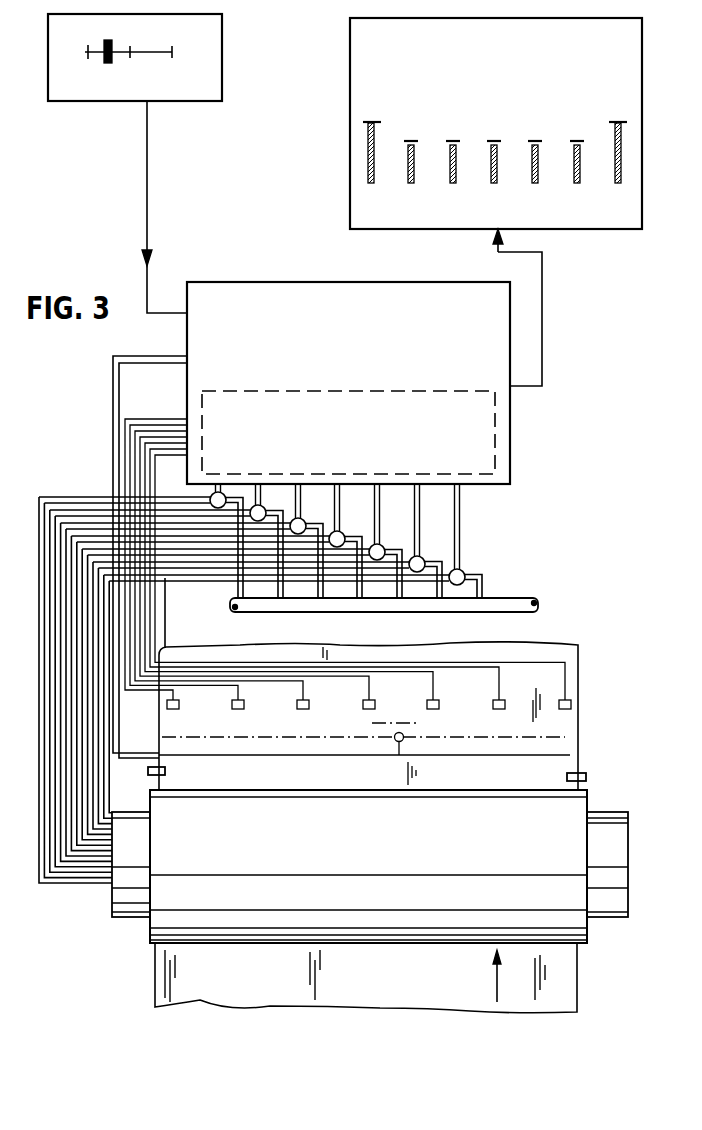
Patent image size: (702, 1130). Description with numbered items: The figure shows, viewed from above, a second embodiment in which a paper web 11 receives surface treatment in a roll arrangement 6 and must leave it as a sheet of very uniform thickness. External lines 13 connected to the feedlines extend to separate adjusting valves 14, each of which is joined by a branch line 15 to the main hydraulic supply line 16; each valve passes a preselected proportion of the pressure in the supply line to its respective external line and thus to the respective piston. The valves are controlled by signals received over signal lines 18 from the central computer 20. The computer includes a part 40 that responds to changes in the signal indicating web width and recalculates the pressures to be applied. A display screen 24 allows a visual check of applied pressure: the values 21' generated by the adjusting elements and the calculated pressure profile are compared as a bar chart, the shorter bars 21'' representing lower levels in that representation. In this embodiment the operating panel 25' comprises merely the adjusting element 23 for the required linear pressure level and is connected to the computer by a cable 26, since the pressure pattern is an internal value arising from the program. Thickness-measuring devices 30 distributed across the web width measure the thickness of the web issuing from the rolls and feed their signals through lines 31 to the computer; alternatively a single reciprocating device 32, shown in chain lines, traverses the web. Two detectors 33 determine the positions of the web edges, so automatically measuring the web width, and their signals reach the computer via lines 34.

The roll arrangement 6 is at (582, 810).
The web 11 is at (578, 665).
The external lines 13 is at (83, 522).
The adjusting valves 14 is at (463, 572).
The branch line 15 is at (232, 592).
The main hydraulic supply line 16 is at (524, 600).
The signal lines 18 is at (425, 540).
The central computer 20 is at (257, 292).
The values 21' is at (463, 152).
The display bar (short) 21'' is at (441, 163).
The adjusting element 23 is at (160, 50).
The display screen 24 is at (350, 203).
The operating panel 25' is at (167, 57).
The cable 26 is at (147, 186).
The thickness-measuring devices 30 is at (571, 706).
The lines 31 is at (165, 618).
The thickness-measuring device 32 is at (396, 760).
The detectors 33 is at (604, 766).
The lines 34 is at (119, 393).
The part 40 is at (490, 452).